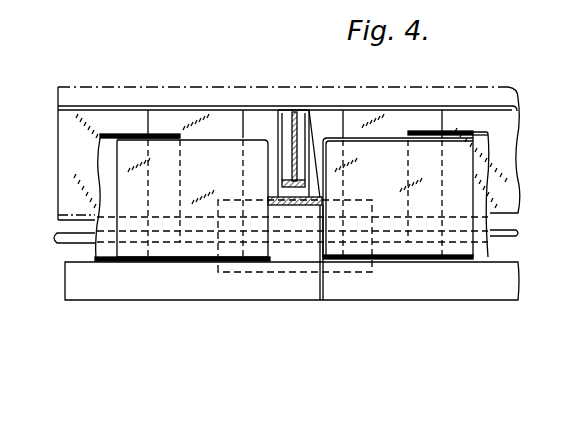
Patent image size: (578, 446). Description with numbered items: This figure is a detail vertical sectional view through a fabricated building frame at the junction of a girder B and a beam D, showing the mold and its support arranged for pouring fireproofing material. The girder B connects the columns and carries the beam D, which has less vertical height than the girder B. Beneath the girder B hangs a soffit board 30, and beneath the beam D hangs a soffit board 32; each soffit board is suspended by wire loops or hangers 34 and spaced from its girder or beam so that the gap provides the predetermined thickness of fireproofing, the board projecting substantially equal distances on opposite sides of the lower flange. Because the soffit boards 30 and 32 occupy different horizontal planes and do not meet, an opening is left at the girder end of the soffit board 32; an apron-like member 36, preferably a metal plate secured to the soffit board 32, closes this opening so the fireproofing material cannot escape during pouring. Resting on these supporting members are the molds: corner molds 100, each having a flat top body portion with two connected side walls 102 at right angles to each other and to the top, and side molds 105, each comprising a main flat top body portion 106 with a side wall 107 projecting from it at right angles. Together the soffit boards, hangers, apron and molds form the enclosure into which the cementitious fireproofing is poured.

The girder B is at (509, 122).
The beam D is at (303, 108).
The soffit board 30 is at (62, 238).
The soffit board 32 is at (277, 198).
The wire loop hanger 34 is at (277, 124).
The apron-like member 36 is at (238, 275).
The corner mold 100 is at (192, 138).
The side wall 102 is at (138, 250).
The side mold 105 is at (112, 133).
The top body portion 106 is at (130, 136).
The side wall 107 is at (102, 170).